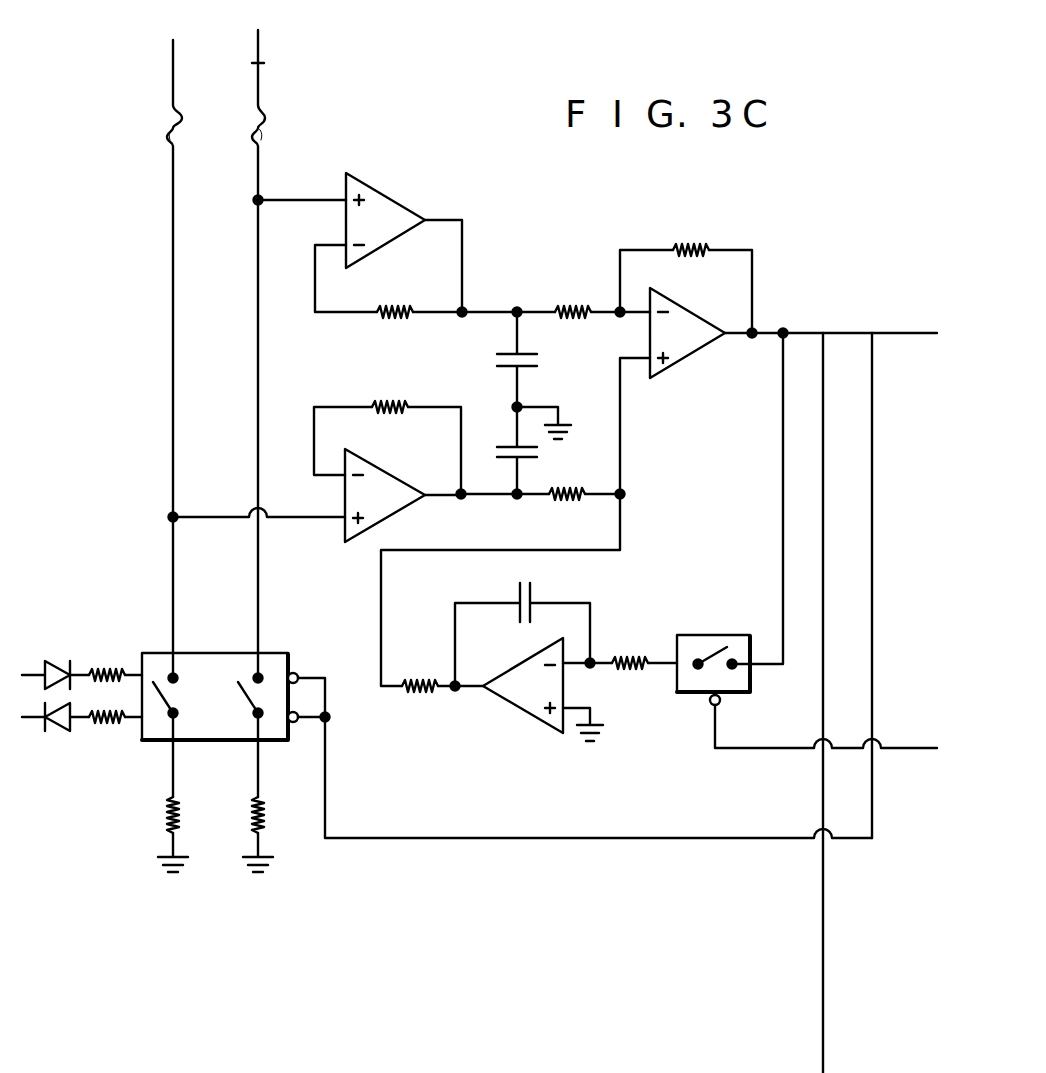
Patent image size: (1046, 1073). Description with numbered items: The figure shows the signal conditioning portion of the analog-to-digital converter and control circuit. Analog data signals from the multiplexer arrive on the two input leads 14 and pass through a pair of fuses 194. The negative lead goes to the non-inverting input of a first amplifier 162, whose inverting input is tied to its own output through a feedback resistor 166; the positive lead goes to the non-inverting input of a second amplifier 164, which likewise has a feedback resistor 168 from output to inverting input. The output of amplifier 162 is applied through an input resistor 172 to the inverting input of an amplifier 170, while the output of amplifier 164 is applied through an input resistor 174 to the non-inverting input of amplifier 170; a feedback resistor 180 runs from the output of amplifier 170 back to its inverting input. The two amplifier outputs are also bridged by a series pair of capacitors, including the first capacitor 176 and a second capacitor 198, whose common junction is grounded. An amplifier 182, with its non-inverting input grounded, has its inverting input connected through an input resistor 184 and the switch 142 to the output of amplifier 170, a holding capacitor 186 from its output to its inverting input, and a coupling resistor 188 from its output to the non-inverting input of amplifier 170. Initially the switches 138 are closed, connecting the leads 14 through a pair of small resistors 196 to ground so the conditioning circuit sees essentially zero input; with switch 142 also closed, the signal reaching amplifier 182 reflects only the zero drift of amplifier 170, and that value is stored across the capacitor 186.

The input leads 14 is at (258, 63).
The fuses 194 is at (250, 130).
The first amplifier 162 is at (386, 199).
The feedback resistor 166 is at (392, 307).
The input resistor 172 is at (567, 306).
The first capacitor 176 is at (539, 359).
The capacitor 198 is at (537, 452).
The amplifier 170 is at (691, 362).
The feedback resistor 180 is at (686, 246).
The second amplifier 164 is at (390, 519).
The feedback resistor 168 is at (387, 402).
The input resistor 174 is at (570, 500).
The amplifier 182 is at (538, 729).
The coupling resistor 188 is at (410, 694).
The holding capacitor 186 is at (534, 595).
The input resistor 184 is at (624, 649).
The switch 142 is at (712, 637).
The switches 138 is at (270, 653).
The small resistors 196 is at (256, 802).